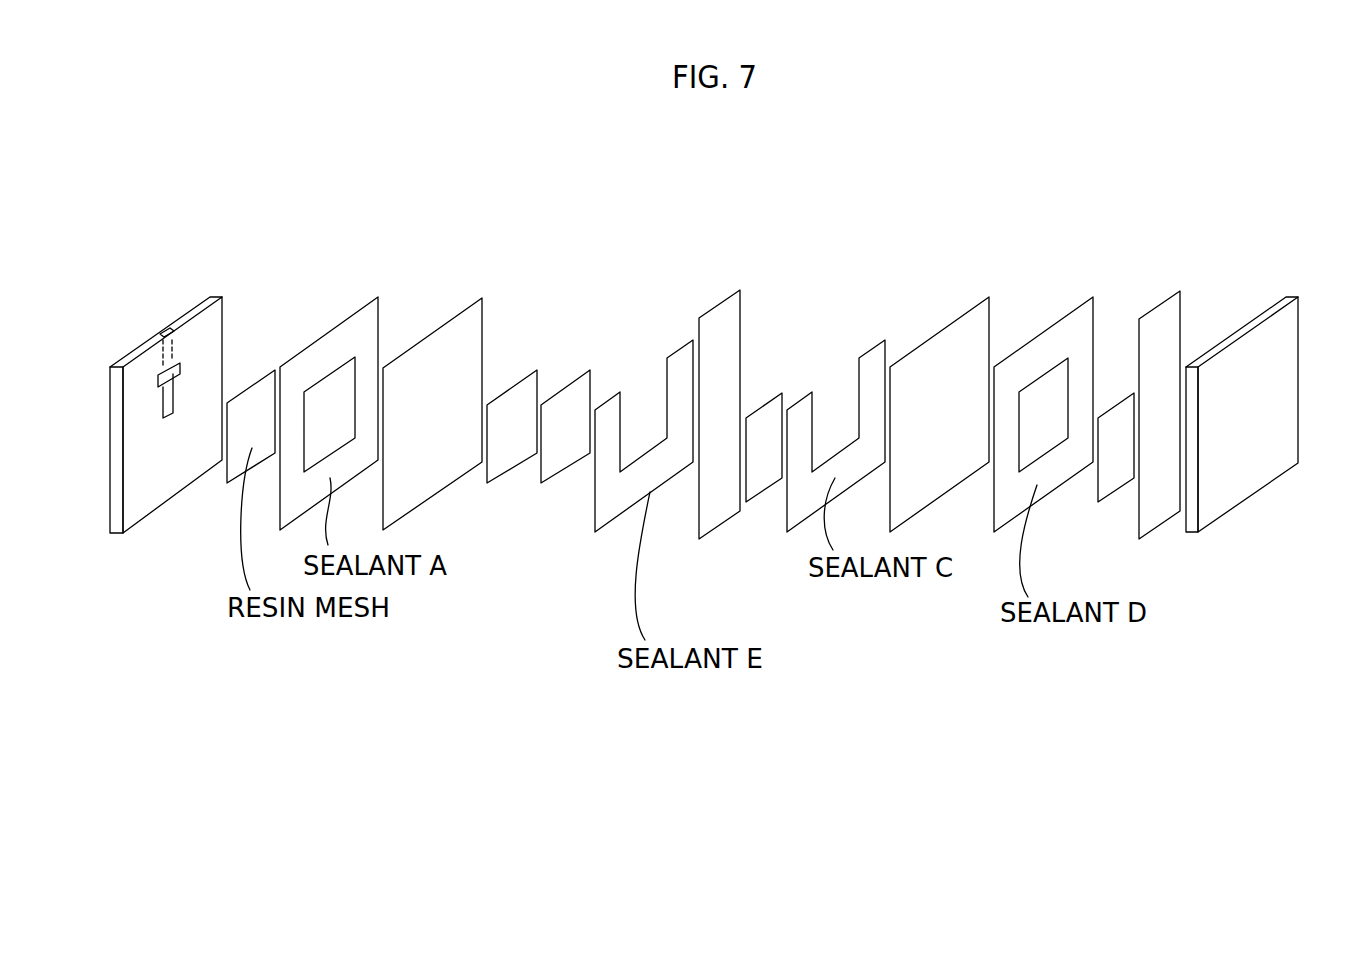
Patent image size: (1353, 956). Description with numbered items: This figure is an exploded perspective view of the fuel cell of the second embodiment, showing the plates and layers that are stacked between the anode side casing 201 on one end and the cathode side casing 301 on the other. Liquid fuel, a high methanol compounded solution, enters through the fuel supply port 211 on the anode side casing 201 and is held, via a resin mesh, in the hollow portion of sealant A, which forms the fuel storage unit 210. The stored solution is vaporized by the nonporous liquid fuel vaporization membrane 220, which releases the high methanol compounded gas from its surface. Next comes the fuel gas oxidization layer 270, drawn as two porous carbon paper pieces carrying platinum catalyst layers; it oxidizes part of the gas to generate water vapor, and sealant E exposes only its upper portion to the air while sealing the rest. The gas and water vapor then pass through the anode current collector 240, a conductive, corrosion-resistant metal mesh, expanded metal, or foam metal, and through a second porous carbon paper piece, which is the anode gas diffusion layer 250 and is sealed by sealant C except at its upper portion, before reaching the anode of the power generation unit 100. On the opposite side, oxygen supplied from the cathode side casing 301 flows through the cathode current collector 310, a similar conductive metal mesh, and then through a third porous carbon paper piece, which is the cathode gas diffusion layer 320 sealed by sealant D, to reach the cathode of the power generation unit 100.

The power generation unit 100 is at (937, 357).
The anode side casing 201 is at (173, 475).
The fuel supply port 211 is at (163, 330).
The fuel storage unit 210 is at (330, 392).
The liquid fuel vaporization membrane 220 is at (437, 353).
The fuel gas oxidization layer 270 is at (567, 458).
The anode current collector 240 is at (723, 325).
The anode gas diffusion layer 250 is at (762, 478).
The cathode current collector 310 is at (1160, 323).
The cathode gas diffusion layer 320 is at (1115, 478).
The cathode side casing 301 is at (1248, 352).